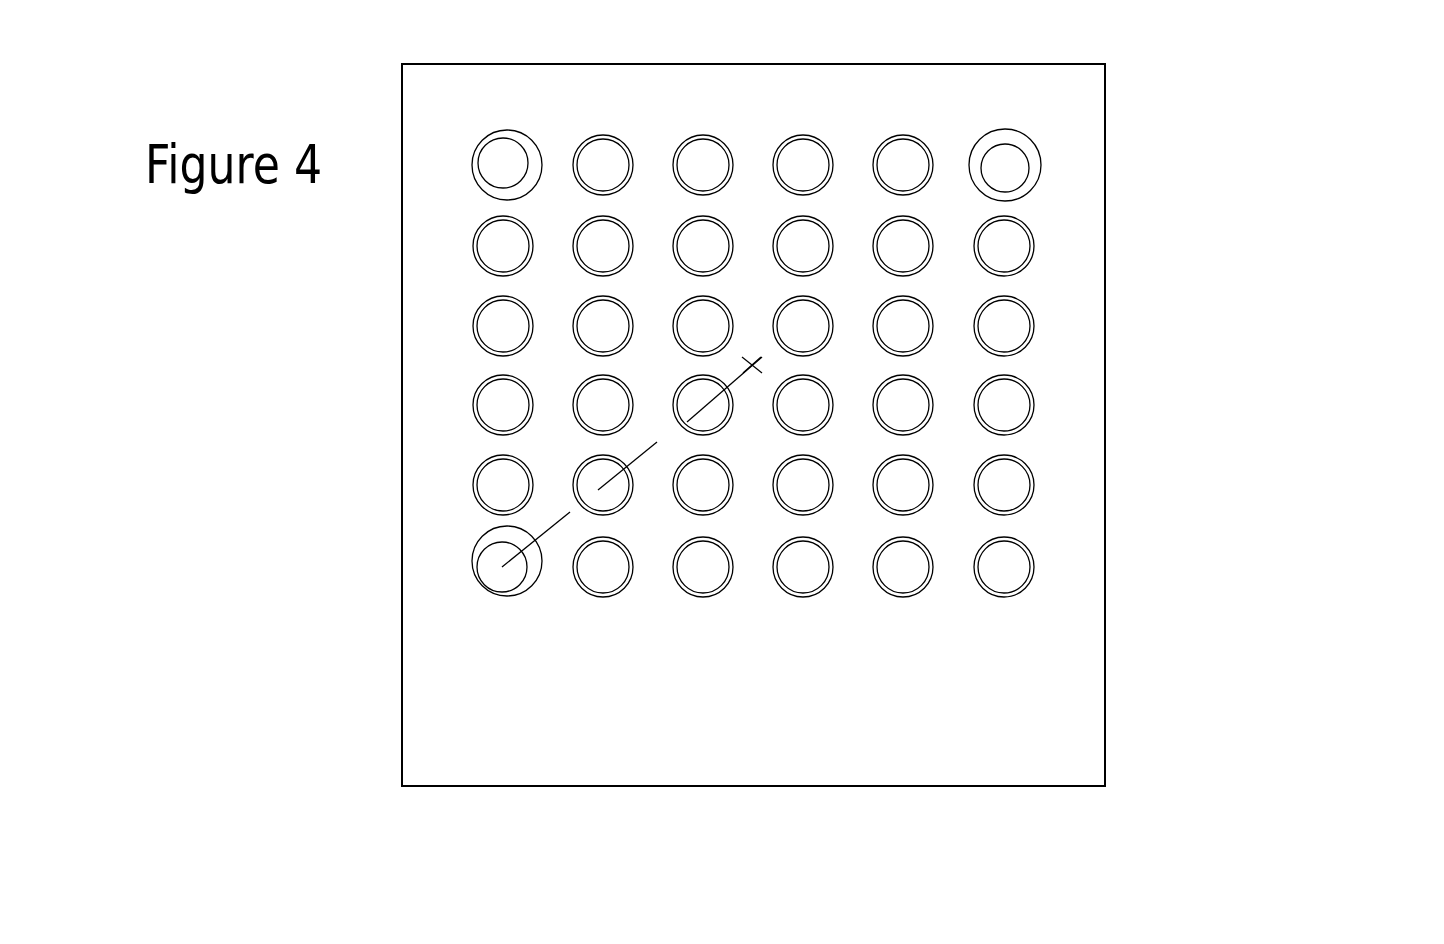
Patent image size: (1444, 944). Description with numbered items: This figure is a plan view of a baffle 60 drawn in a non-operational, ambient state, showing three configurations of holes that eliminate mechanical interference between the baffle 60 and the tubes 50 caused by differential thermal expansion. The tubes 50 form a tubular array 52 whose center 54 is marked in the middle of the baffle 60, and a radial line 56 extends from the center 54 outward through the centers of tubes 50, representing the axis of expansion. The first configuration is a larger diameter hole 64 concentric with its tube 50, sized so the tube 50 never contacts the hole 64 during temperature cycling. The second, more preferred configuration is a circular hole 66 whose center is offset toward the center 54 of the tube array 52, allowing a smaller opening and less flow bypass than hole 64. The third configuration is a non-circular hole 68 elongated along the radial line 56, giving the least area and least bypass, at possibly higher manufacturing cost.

The tube 50 is at (1057, 571).
The tubular array 52 is at (1050, 237).
The center of the tubular array 54 is at (830, 367).
The radial line 56 is at (552, 560).
The baffle 60 is at (895, 452).
The larger diameter hole 64 is at (1197, 136).
The offset circular hole 66 is at (344, 226).
The non-circular hole 68 is at (338, 622).